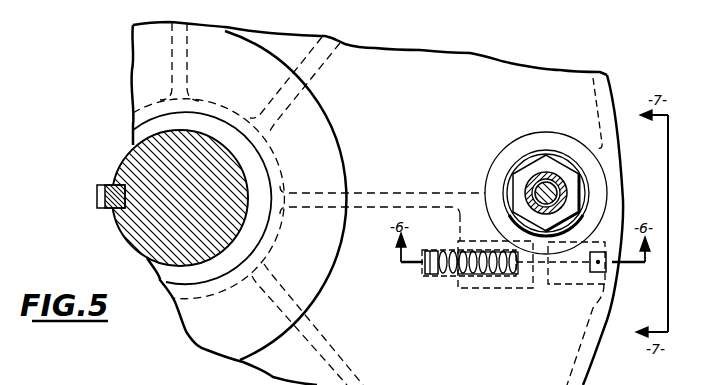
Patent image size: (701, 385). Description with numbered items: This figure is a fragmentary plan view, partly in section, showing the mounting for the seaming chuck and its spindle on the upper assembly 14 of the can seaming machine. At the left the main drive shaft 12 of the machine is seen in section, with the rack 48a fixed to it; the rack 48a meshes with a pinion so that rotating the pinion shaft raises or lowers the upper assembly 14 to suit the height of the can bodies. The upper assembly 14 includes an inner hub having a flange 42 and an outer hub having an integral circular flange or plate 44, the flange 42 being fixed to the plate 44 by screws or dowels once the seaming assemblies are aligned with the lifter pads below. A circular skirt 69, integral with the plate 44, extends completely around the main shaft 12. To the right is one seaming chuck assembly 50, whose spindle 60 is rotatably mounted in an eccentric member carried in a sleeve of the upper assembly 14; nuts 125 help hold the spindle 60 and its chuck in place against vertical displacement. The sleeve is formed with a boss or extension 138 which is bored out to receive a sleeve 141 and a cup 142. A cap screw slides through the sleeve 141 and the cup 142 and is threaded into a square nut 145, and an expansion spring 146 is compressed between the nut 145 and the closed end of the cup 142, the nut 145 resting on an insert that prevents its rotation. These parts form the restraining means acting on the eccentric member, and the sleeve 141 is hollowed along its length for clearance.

The main drive shaft 12 is at (125, 231).
The upper assembly 14 is at (512, 63).
The flange 42 is at (335, 143).
The circular flange or plate 44 is at (414, 362).
The rack 48a is at (103, 183).
The seaming chuck assembly 50 is at (549, 146).
The spindle 60 is at (538, 190).
The circular skirt 69 is at (577, 357).
The nuts 125 is at (528, 181).
The boss or extension 138 is at (458, 228).
The sleeve 141 is at (580, 284).
The cup 142 is at (499, 283).
The square nut 145 is at (437, 278).
The expansion spring 146 is at (470, 281).